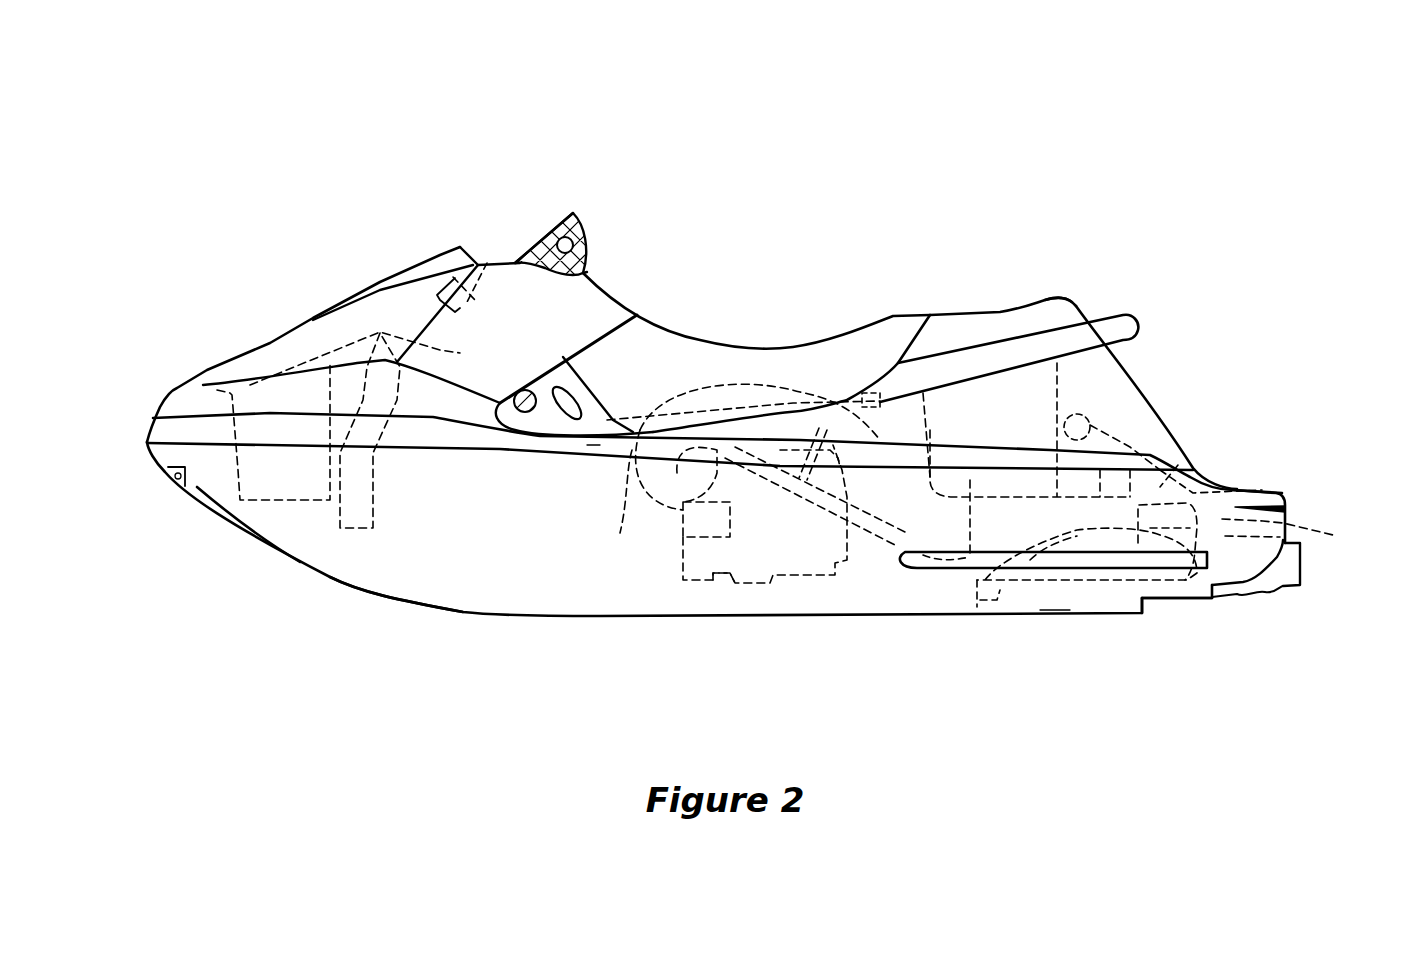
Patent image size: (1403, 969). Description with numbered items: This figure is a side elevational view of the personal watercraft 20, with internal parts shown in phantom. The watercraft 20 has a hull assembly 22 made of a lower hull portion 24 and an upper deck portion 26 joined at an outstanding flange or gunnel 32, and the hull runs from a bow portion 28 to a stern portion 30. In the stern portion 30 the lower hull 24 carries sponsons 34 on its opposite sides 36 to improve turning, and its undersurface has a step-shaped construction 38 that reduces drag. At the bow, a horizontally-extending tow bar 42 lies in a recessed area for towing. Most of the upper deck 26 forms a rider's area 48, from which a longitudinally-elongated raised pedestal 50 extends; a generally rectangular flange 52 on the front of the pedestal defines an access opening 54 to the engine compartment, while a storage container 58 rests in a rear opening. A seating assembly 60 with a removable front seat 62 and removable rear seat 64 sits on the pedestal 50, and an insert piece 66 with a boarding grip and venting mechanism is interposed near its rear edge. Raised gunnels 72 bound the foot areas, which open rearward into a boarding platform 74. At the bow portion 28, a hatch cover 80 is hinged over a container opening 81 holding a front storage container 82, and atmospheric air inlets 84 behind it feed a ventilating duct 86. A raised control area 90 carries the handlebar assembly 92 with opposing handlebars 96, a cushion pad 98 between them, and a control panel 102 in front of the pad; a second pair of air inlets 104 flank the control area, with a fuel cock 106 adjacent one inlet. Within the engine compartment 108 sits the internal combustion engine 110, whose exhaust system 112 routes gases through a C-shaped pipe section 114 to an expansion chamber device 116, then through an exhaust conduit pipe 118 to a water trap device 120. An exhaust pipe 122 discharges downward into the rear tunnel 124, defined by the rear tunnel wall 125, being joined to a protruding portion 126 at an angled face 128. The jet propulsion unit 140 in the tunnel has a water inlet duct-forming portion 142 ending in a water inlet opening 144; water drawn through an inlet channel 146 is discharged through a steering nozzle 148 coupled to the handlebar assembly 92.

The watercraft 20 is at (865, 230).
The hull assembly 22 is at (452, 608).
The lower hull portion 24 is at (322, 578).
The upper deck portion 26 is at (187, 403).
The bow portion 28 is at (265, 530).
The stern portion 30 is at (1294, 490).
The gunnel 32 is at (587, 445).
The sponsons 34 is at (917, 570).
The sides 36 is at (940, 597).
The step-shaped construction 38 is at (1192, 600).
The tow bar 42 is at (175, 477).
The rider's area 48 is at (745, 243).
The raised pedestal 50 is at (1130, 368).
The rectangular flange 52 is at (615, 416).
The access opening 54 is at (818, 395).
The storage container 58 is at (1064, 396).
The seating assembly 60 is at (1060, 288).
The front seat 62 is at (682, 323).
The rear seat 64 is at (968, 310).
The insert piece 66 is at (1137, 320).
The raised gunnels 72 is at (613, 478).
The boarding platform 74 is at (1265, 487).
The hatch cover 80 is at (380, 310).
The container opening 81 is at (245, 400).
The front storage container 82 is at (225, 475).
The atmospheric air inlets 84 is at (358, 357).
The ventilating duct 86 is at (373, 492).
The raised control area 90 is at (508, 292).
The handlebar assembly 92 is at (603, 188).
The handlebars 96 is at (580, 250).
The cushion pad 98 is at (548, 215).
The control panel 102 is at (457, 277).
The air inlets 104 is at (563, 418).
The fuel cock 106 is at (513, 420).
The engine compartment 108 is at (668, 577).
The internal combustion engine 110 is at (825, 582).
The exhaust system 112 is at (735, 385).
The C-shaped pipe section 114 is at (633, 470).
The expansion chamber device 116 is at (770, 400).
The exhaust conduit pipe 118 is at (880, 527).
The water trap device 120 is at (978, 584).
The exhaust pipe 122 is at (1114, 426).
The rear tunnel 124 is at (1305, 532).
The rear tunnel wall 125 is at (1140, 586).
The protruding portion 126 is at (1210, 500).
The angled face 128 is at (1167, 485).
The jet propulsion unit 140 is at (1306, 570).
The water inlet duct-forming portion 142 is at (1083, 540).
The water inlet opening 144 is at (1056, 613).
The inlet channel 146 is at (1012, 565).
The steering nozzle 148 is at (1282, 590).